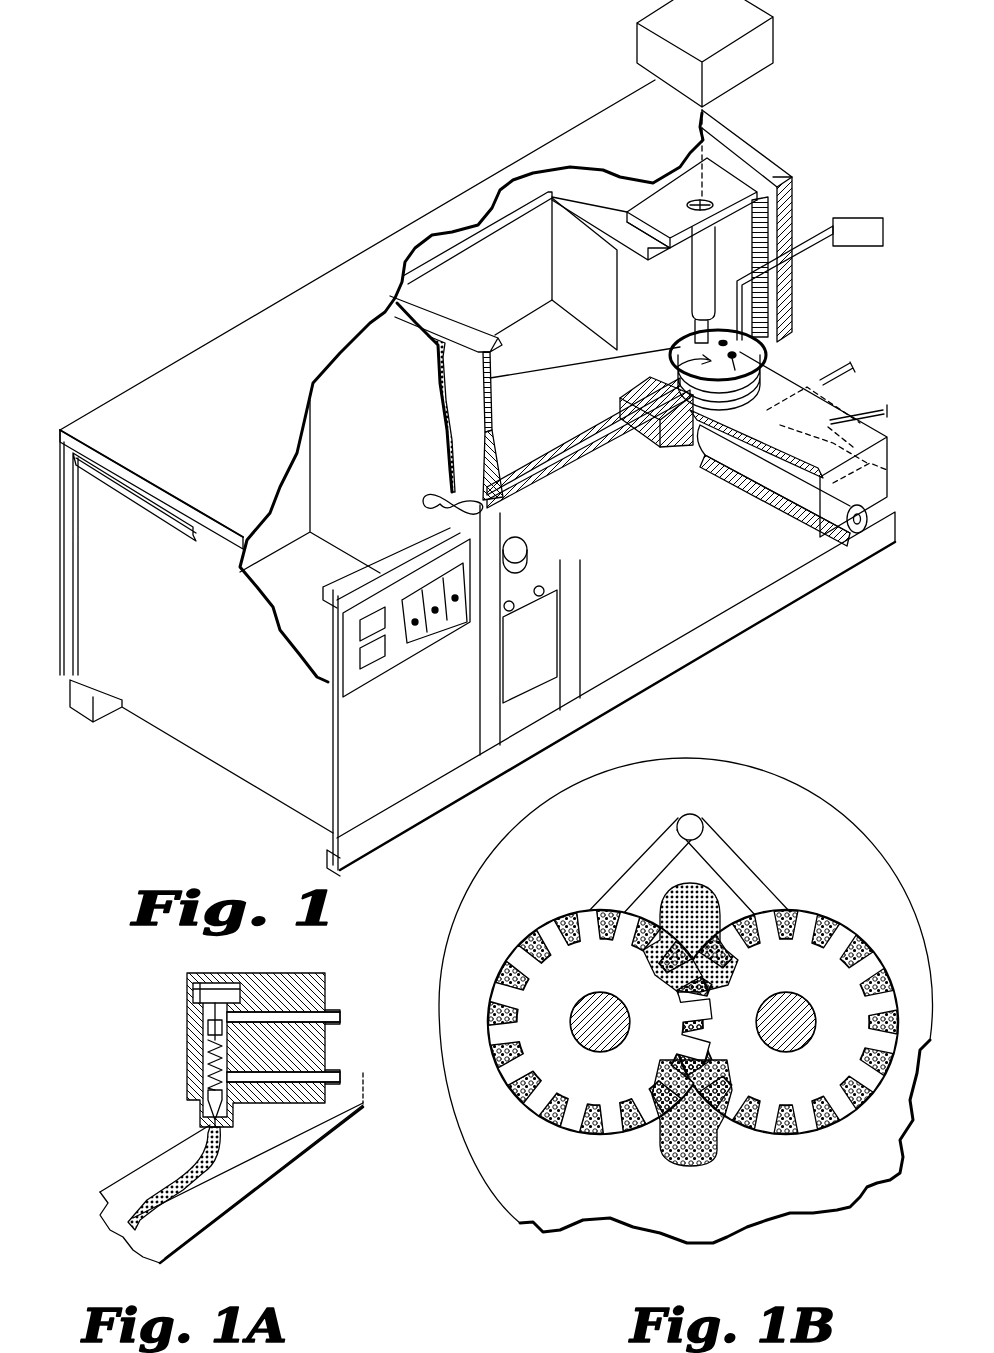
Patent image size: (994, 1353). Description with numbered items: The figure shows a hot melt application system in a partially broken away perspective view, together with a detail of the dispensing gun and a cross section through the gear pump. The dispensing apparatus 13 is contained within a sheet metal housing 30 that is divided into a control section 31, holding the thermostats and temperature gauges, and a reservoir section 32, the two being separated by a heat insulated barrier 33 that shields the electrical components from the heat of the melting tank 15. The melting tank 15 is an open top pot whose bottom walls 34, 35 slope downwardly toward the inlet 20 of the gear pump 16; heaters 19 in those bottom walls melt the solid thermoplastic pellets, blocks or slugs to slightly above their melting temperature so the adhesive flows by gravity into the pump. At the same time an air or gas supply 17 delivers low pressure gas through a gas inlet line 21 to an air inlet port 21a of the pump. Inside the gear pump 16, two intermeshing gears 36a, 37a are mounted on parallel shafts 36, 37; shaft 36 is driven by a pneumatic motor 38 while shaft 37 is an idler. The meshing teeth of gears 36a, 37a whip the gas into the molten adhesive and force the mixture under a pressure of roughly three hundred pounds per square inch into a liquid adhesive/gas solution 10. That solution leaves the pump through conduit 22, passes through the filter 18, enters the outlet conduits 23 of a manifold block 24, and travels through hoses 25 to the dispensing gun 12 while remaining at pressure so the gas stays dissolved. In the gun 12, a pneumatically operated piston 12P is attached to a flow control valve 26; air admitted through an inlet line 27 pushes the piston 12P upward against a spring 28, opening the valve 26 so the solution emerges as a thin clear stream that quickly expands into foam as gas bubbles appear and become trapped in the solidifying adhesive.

In FIG. 1B, the liquid adhesive/gas solution 10 is at (680, 1167).
In FIG. 1A, the dispensing gun 12 is at (144, 1071).
In FIG. 1A, the pneumatically operated piston 12P is at (193, 993).
In FIG. 1, the dispensing apparatus 13 is at (254, 230).
In FIG. 1, the melting tank 15 is at (502, 258).
In FIG. 1, the gear pump 16 is at (672, 365).
In FIG. 1B, the gear pump 16 is at (484, 1207).
In FIG. 1, the air or gas supply 17 is at (880, 218).
In FIG. 1, the filter 18 is at (777, 478).
In FIG. 1, the heaters 19 is at (570, 466).
In FIG. 1, the inlet 20 is at (787, 333).
In FIG. 1, the gas inlet line 21 is at (817, 250).
In FIG. 1B, the air inlet port 21a is at (698, 822).
In FIG. 1, the conduit 22 is at (710, 428).
In FIG. 1, the outlet conduits 23 is at (880, 460).
In FIG. 1, the manifold block 24 is at (887, 437).
In FIG. 1, the hoses 25 is at (870, 407).
In FIG. 1A, the hoses 25 is at (340, 1072).
In FIG. 1A, the flow control valve 26 is at (200, 1102).
In FIG. 1A, the inlet line 27 is at (340, 1012).
In FIG. 1A, the spring 28 is at (205, 1034).
In FIG. 1, the sheet metal housing 30 is at (212, 372).
In FIG. 1, the control section 31 is at (340, 492).
In FIG. 1, the reservoir section 32 is at (450, 290).
In FIG. 1, the heat insulated barrier 33 is at (400, 330).
In FIG. 1, the bottom wall 34 is at (548, 344).
In FIG. 1, the bottom wall 35 is at (558, 406).
In FIG. 1, the shaft 36 is at (687, 320).
In FIG. 1B, the shaft 36 is at (622, 1022).
In FIG. 1B, the gear 36a is at (600, 1022).
In FIG. 1, the idler shaft 37 is at (787, 373).
In FIG. 1B, the idler shaft 37 is at (805, 1025).
In FIG. 1B, the gear 37a is at (786, 1022).
In FIG. 1, the pneumatic motor 38 is at (705, 53).